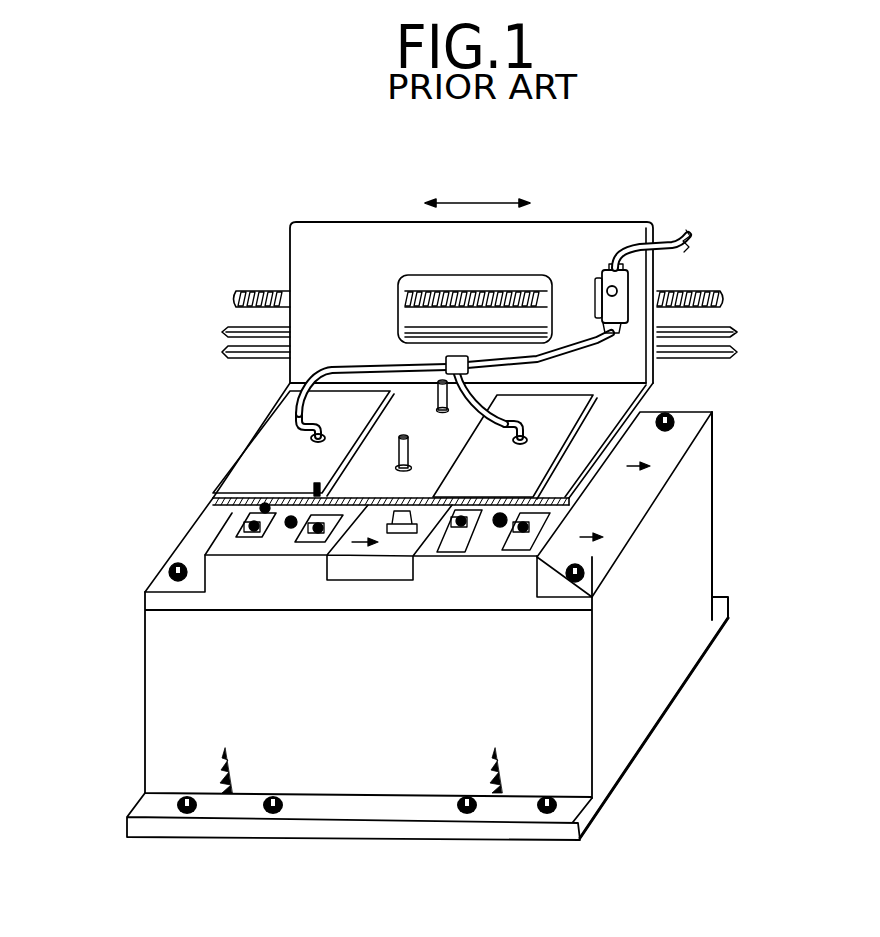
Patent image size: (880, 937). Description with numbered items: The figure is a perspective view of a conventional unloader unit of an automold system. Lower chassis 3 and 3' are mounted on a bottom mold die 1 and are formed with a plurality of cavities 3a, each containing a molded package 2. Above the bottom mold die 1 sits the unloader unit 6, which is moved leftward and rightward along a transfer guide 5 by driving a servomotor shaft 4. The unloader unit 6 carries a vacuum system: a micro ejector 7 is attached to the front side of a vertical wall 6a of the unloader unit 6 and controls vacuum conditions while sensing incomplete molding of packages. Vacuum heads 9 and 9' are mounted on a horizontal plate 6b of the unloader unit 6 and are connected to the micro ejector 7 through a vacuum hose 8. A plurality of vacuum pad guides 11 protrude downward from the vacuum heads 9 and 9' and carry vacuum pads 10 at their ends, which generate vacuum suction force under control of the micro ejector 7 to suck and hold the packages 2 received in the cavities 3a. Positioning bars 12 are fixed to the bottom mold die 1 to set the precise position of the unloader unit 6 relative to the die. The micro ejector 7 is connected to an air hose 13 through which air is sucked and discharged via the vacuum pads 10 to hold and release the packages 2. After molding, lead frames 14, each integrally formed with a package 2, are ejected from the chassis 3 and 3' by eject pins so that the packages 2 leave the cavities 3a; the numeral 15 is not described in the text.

The bottom mold die 1 is at (143, 751).
The molded package 2 is at (463, 549).
The lower chassis 3 is at (217, 689).
The lower chassis 3' is at (501, 720).
The cavity 3a is at (593, 612).
The servomotor shaft 4 is at (698, 290).
The transfer guide 5 is at (722, 357).
The unloader unit 6 is at (574, 222).
The vertical wall 6a is at (622, 248).
The horizontal plate 6b is at (226, 480).
The micro ejector 7 is at (608, 264).
The vacuum hose 8 is at (367, 366).
The vacuum head 9 is at (276, 443).
The vacuum head 9' is at (625, 473).
The vacuum pad 10 is at (232, 516).
The vacuum pad guide 11 is at (212, 499).
The positioning bar 12 is at (400, 436).
The air hose 13 is at (683, 230).
The lead frame 14 is at (247, 513).
The clamp jaws 15 is at (260, 538).